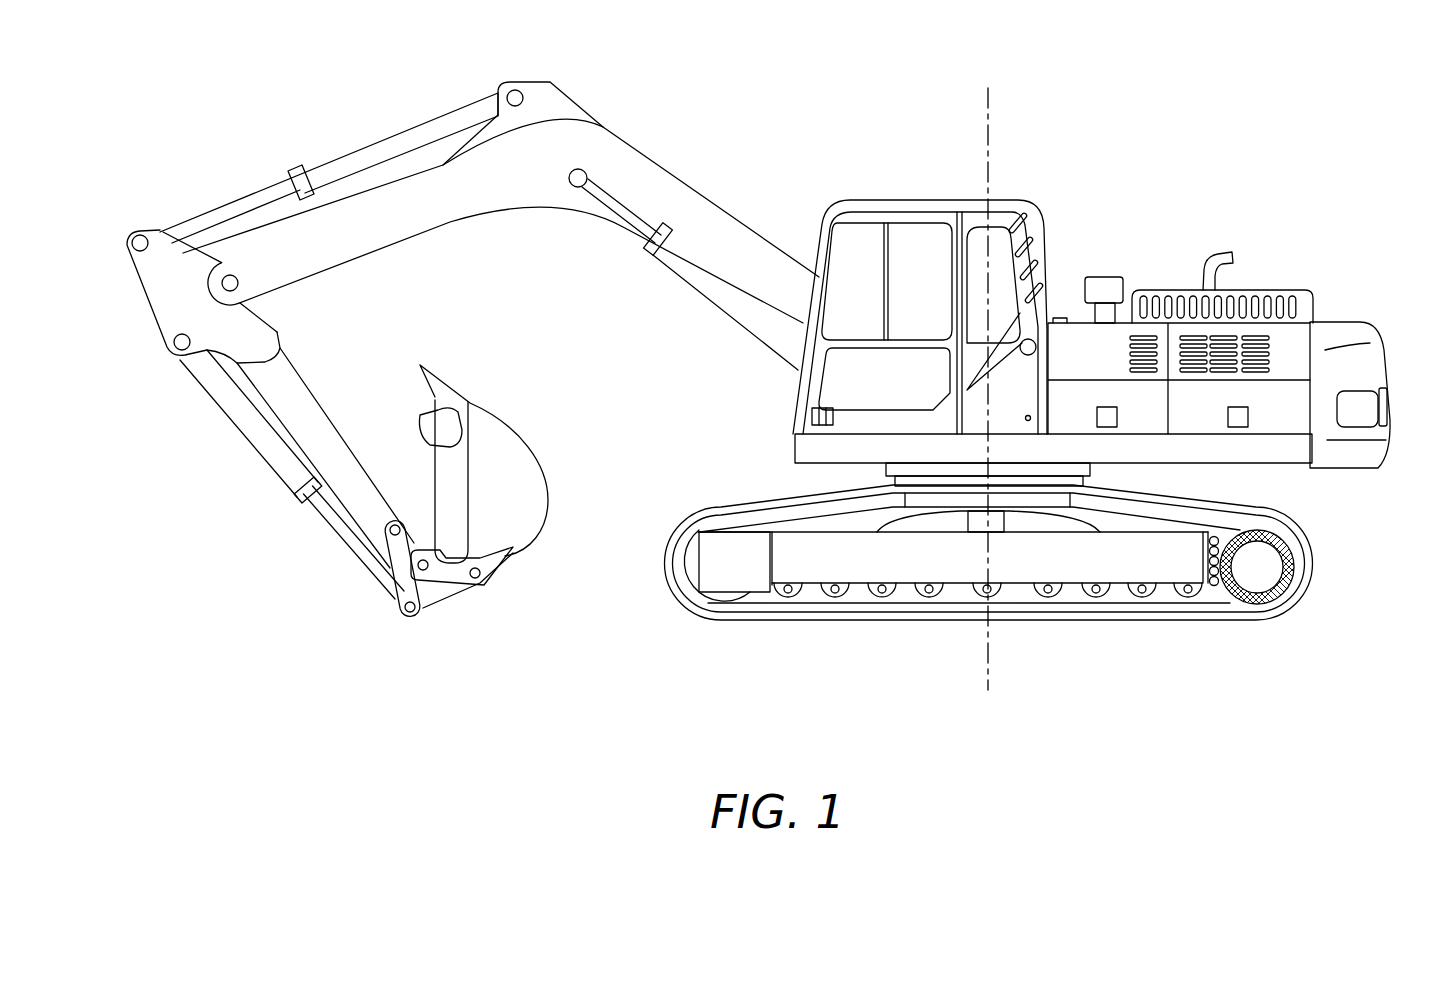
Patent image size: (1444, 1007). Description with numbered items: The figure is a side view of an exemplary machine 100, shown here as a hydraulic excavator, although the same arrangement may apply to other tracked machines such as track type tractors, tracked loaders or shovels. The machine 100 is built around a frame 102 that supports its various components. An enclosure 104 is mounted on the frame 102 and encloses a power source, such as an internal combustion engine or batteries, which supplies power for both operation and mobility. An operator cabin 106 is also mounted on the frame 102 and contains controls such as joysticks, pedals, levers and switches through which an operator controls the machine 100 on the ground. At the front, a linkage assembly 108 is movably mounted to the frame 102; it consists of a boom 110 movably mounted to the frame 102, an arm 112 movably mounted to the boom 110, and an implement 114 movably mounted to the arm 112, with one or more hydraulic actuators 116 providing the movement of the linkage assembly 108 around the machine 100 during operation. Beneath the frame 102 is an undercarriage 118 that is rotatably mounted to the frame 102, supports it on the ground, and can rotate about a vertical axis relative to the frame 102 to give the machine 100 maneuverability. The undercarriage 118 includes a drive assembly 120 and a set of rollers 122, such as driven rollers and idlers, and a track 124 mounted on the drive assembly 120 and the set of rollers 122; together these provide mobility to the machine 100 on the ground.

The machine 100 is at (1252, 113).
The frame 102 is at (1290, 456).
The enclosure 104 is at (1297, 337).
The operator cabin 106 is at (873, 197).
The linkage assembly 108 is at (200, 138).
The boom 110 is at (657, 162).
The arm 112 is at (294, 391).
The implement 114 is at (523, 520).
The hydraulic actuators 116 is at (363, 150).
The undercarriage 118 is at (1332, 563).
The drive assembly 120 is at (1256, 574).
The set of rollers 122 is at (847, 594).
The track 124 is at (1107, 608).